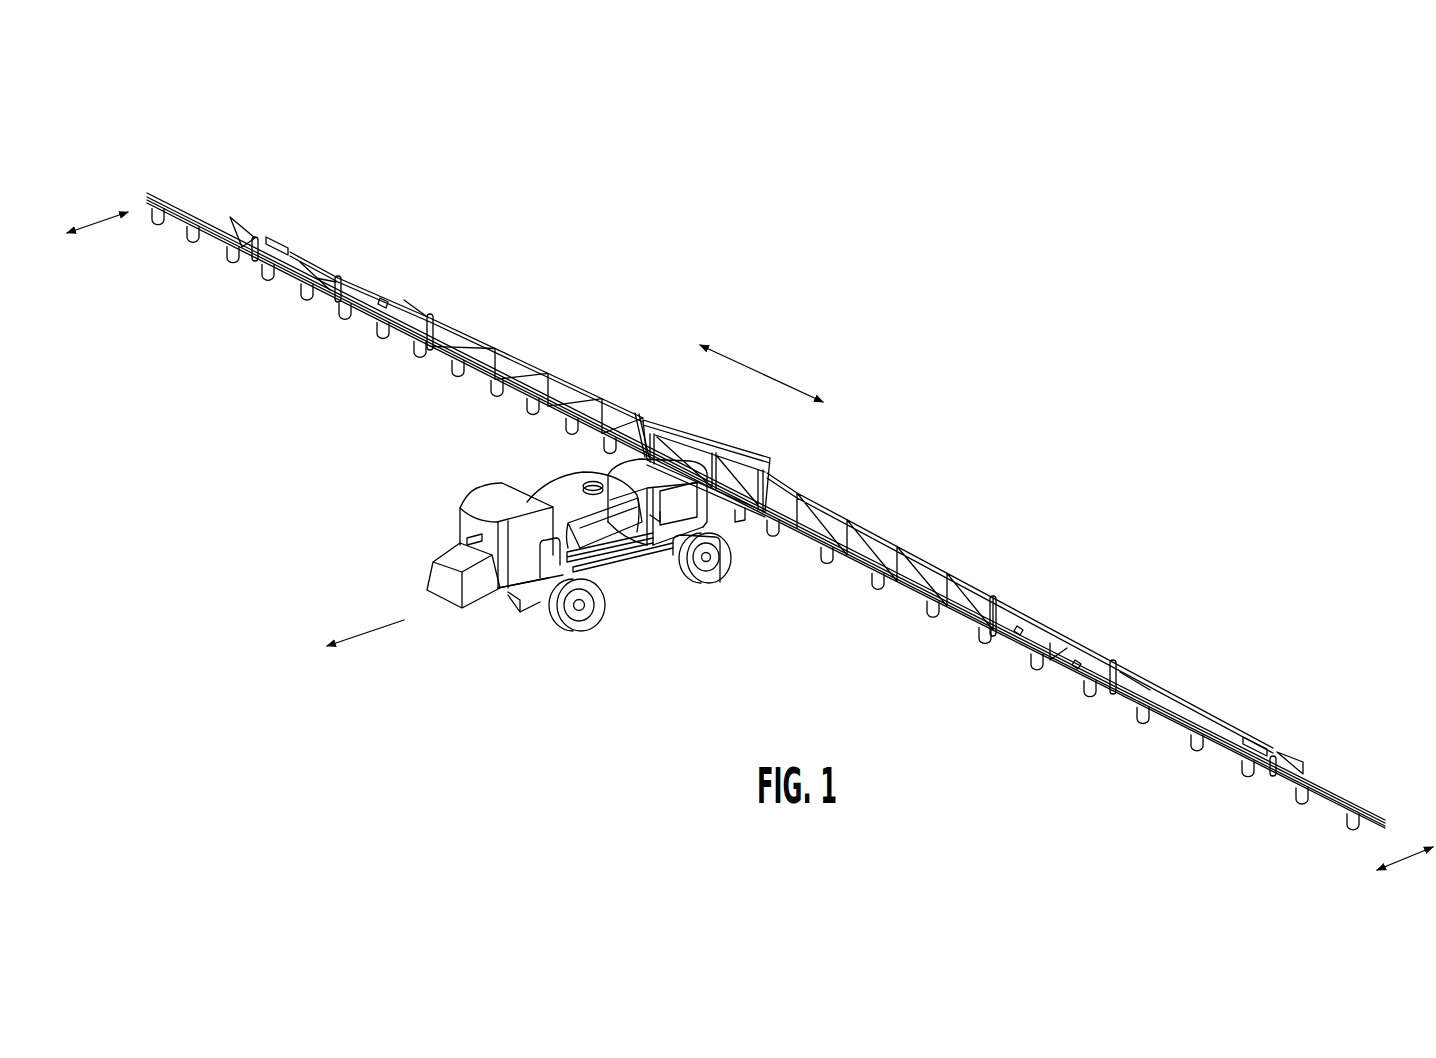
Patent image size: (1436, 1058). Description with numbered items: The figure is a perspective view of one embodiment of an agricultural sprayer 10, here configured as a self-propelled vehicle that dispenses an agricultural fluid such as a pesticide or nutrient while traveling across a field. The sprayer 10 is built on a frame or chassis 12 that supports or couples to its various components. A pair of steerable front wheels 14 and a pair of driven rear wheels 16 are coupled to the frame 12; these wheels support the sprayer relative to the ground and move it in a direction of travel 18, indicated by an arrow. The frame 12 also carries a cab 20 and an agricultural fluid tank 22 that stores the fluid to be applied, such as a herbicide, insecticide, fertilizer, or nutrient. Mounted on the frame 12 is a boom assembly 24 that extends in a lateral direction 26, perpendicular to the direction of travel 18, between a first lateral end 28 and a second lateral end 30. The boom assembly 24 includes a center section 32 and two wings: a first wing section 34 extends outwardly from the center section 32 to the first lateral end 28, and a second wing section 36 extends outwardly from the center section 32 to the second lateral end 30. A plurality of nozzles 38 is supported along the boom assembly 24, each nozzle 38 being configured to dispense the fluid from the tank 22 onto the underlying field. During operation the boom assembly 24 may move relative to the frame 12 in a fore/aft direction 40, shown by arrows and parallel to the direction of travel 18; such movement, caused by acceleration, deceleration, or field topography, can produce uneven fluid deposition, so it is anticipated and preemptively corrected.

The agricultural sprayer 10 is at (173, 161).
The frame or chassis 12 is at (613, 577).
The front wheels 14 is at (573, 628).
The rear wheels 16 is at (707, 582).
The direction of travel 18 is at (369, 633).
The cab 20 is at (480, 503).
The agricultural fluid tank 22 is at (560, 481).
The boom assembly 24 is at (819, 473).
The lateral direction 26 is at (762, 372).
The first lateral end 28 is at (1375, 780).
The second lateral end 30 is at (128, 168).
The center section 32 is at (725, 437).
The first wing section 34 is at (1090, 657).
The second wing section 36 is at (318, 262).
The nozzles 38 is at (385, 345).
The fore/aft direction 40 is at (100, 222).